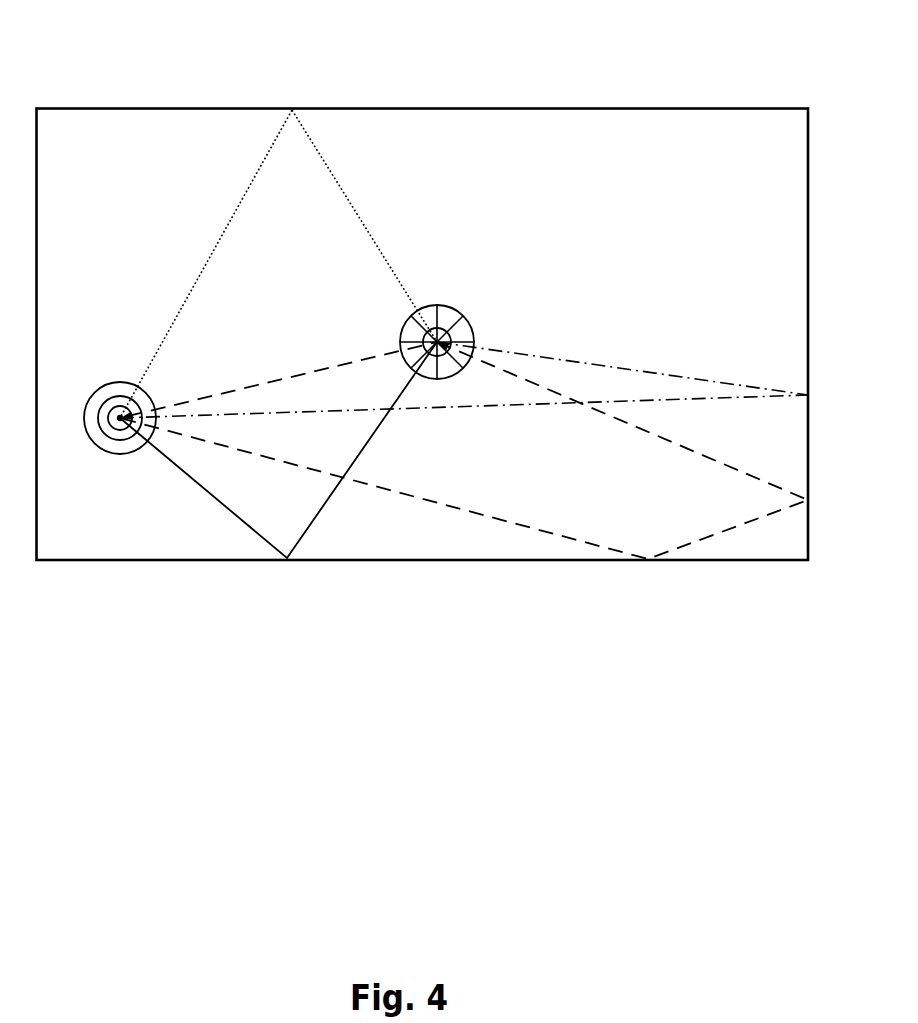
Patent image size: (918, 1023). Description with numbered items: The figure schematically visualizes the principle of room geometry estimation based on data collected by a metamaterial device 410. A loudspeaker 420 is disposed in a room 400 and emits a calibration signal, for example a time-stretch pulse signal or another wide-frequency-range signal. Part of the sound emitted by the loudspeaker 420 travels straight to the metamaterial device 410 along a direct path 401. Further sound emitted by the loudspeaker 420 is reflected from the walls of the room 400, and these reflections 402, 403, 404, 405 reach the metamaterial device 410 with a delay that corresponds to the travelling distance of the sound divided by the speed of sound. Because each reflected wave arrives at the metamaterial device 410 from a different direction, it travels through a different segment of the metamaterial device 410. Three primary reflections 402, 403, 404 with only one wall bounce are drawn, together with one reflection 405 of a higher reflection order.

The room 400 is at (585, 108).
The direct path 401 is at (277, 412).
The reflection 402 is at (318, 518).
The reflection 403 is at (662, 373).
The reflection 404 is at (335, 175).
The reflection of a higher reflection order 405 is at (690, 447).
The metamaterial device 410 is at (448, 303).
The loudspeaker 420 is at (120, 418).